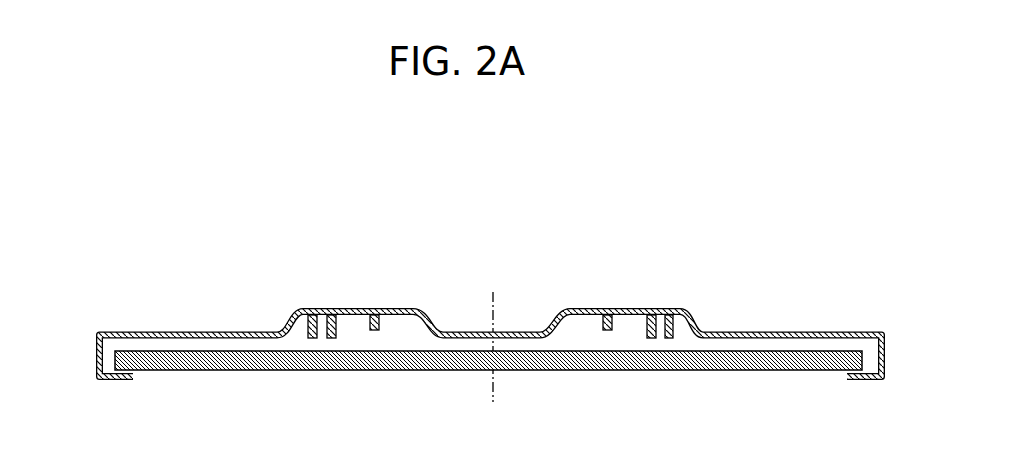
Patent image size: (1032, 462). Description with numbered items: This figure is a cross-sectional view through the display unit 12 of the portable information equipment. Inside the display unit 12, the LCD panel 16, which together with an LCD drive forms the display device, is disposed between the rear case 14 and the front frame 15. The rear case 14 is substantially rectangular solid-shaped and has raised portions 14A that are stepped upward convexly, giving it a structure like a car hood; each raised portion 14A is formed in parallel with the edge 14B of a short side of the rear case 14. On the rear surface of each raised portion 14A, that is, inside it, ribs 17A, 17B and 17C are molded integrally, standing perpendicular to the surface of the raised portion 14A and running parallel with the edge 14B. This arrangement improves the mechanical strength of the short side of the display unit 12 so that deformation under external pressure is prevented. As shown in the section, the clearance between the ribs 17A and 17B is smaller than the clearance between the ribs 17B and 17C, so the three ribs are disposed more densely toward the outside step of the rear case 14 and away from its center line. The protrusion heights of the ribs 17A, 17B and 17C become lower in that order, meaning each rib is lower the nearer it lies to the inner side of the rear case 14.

The display unit 12 is at (545, 375).
The rear case 14 is at (157, 332).
The raised portion 14A is at (402, 310).
The edge 14B is at (102, 332).
The front frame 15 is at (115, 380).
The LCD panel 16 is at (733, 368).
The rib 17A is at (677, 328).
The rib 17B is at (665, 310).
The rib 17C is at (617, 310).